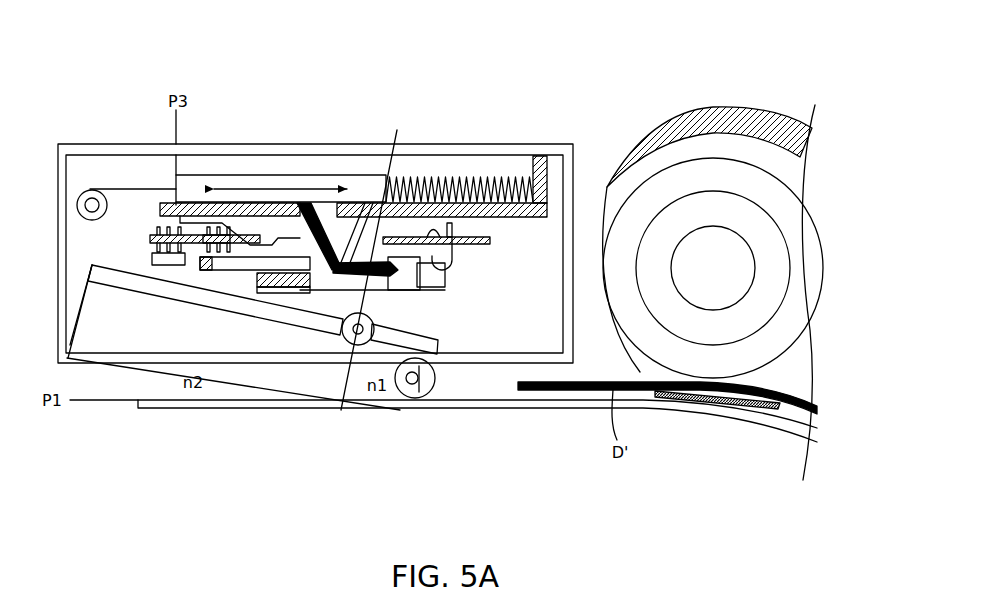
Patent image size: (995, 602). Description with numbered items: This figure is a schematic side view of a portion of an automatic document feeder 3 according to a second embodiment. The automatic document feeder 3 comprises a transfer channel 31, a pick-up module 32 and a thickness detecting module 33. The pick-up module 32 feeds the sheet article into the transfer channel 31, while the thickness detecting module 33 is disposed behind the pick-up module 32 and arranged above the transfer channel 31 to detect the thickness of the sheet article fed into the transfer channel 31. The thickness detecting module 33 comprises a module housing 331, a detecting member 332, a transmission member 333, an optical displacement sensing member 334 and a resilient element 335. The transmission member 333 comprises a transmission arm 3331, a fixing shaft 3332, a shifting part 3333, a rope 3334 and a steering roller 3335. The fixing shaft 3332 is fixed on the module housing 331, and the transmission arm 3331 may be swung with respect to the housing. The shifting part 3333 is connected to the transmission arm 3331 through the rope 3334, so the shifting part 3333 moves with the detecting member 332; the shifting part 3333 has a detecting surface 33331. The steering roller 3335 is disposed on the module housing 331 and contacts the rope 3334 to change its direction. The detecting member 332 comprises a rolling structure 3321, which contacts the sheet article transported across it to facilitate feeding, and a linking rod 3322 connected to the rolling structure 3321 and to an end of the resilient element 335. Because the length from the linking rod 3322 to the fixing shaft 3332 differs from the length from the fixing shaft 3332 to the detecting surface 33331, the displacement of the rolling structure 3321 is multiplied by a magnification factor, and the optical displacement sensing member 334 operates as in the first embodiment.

The automatic document feeder 3 is at (587, 68).
The transfer channel 31 is at (637, 398).
The pick-up module 32 is at (735, 175).
The thickness detecting module 33 is at (252, 86).
The module housing 331 is at (212, 144).
The detecting member 332 is at (460, 385).
The transmission member 333 is at (78, 246).
The optical displacement sensing member 334 is at (393, 147).
The resilient element 335 is at (517, 173).
The rolling structure 3321 is at (432, 379).
The linking rod 3322 is at (420, 395).
The transmission arm 3331 is at (138, 287).
The fixing shaft 3332 is at (422, 202).
The shifting part 3333 is at (341, 178).
The rope 3334 is at (108, 188).
The steering roller 3335 is at (86, 193).
The detecting surface 33331 is at (323, 200).